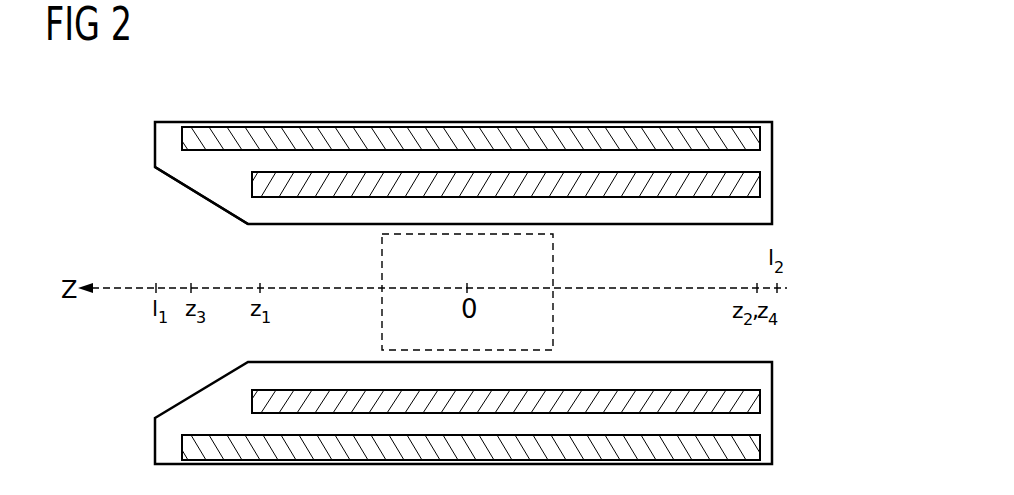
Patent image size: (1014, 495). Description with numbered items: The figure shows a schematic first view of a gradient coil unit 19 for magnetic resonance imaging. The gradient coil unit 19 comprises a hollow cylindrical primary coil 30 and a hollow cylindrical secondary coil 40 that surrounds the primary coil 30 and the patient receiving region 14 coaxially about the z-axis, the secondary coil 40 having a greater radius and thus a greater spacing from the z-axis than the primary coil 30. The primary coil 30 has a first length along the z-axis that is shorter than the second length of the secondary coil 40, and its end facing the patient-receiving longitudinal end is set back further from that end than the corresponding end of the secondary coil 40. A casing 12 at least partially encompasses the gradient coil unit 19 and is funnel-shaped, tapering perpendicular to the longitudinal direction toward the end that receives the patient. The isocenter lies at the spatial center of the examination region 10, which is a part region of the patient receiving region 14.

The examination region 10 is at (553, 258).
The casing 12 is at (503, 121).
The patient receiving region 14 is at (795, 243).
The gradient coil unit 19 is at (138, 153).
The primary coil 30 is at (760, 183).
The secondary coil 40 is at (760, 139).